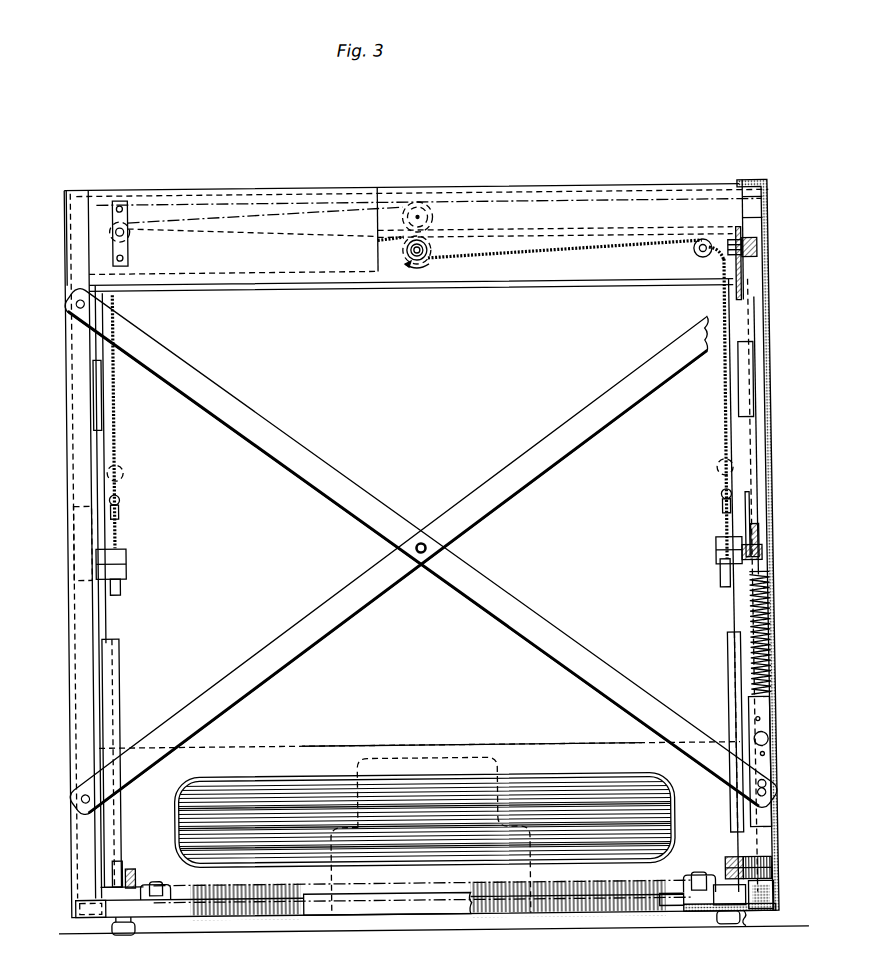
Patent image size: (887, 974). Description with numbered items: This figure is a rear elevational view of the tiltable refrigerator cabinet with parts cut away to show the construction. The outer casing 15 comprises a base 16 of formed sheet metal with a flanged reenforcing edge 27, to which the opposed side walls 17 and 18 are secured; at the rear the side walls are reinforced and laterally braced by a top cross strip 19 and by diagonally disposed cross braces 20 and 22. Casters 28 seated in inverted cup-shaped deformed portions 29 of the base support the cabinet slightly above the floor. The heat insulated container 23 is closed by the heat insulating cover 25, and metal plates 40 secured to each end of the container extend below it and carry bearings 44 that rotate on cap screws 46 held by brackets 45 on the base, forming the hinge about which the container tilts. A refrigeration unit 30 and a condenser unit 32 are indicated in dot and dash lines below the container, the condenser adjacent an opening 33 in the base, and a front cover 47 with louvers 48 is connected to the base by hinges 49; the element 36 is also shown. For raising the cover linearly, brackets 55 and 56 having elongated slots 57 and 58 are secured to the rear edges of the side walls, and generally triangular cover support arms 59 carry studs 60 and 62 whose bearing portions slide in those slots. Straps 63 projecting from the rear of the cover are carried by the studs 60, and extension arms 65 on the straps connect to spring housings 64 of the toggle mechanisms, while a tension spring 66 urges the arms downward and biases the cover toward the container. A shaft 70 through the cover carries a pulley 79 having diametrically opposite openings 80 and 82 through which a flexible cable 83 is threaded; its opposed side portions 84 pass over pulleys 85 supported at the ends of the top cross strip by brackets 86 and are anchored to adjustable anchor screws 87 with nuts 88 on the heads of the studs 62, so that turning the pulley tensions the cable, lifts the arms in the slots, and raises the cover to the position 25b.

The outer casing 15 is at (771, 399).
The base 16 is at (165, 916).
The side wall 17 is at (766, 586).
The side wall 18 is at (68, 608).
The top cross strip 19 is at (366, 188).
The cross brace 20 is at (324, 470).
The cross brace 22 is at (544, 448).
The heat insulated container 23 is at (649, 752).
The cover 25 is at (513, 245).
The cover raised position 25b is at (590, 202).
The flanged reenforcing edge 27 is at (408, 914).
The caster 28 is at (123, 934).
The inverted cup-shaped deformed portion 29 is at (742, 922).
The refrigeration unit 30 is at (496, 766).
The condenser unit 32 is at (585, 892).
The opening 33 is at (676, 909).
The cross rail 36 is at (268, 746).
The metal plate 40 is at (115, 828).
The bearing 44 is at (121, 872).
The bracket 45 is at (99, 882).
The cap screw 46 is at (130, 878).
The cover 47 is at (320, 748).
The louvers 48 is at (568, 794).
The hinge 49 is at (166, 882).
The bracket 55 is at (766, 202).
The bracket 56 is at (750, 507).
The slot 57 is at (766, 221).
The slot 58 is at (752, 528).
The cover support arm 59 is at (756, 452).
The stud 60 is at (760, 250).
The stud 62 is at (126, 562).
The strap 63 is at (740, 232).
The housing 64 is at (103, 396).
The extension arm 65 is at (115, 292).
The tension spring 66 is at (769, 632).
The shaft 70 is at (428, 260).
The pulley 79 is at (428, 246).
The opening 80 is at (405, 212).
The opening 82 is at (430, 264).
The flexible cable 83 is at (413, 260).
The side portion 84 is at (384, 240).
The pulley 85 is at (135, 238).
The bracket 86 is at (264, 221).
The adjustable anchor screw 87 is at (121, 504).
The nut 88 is at (126, 576).